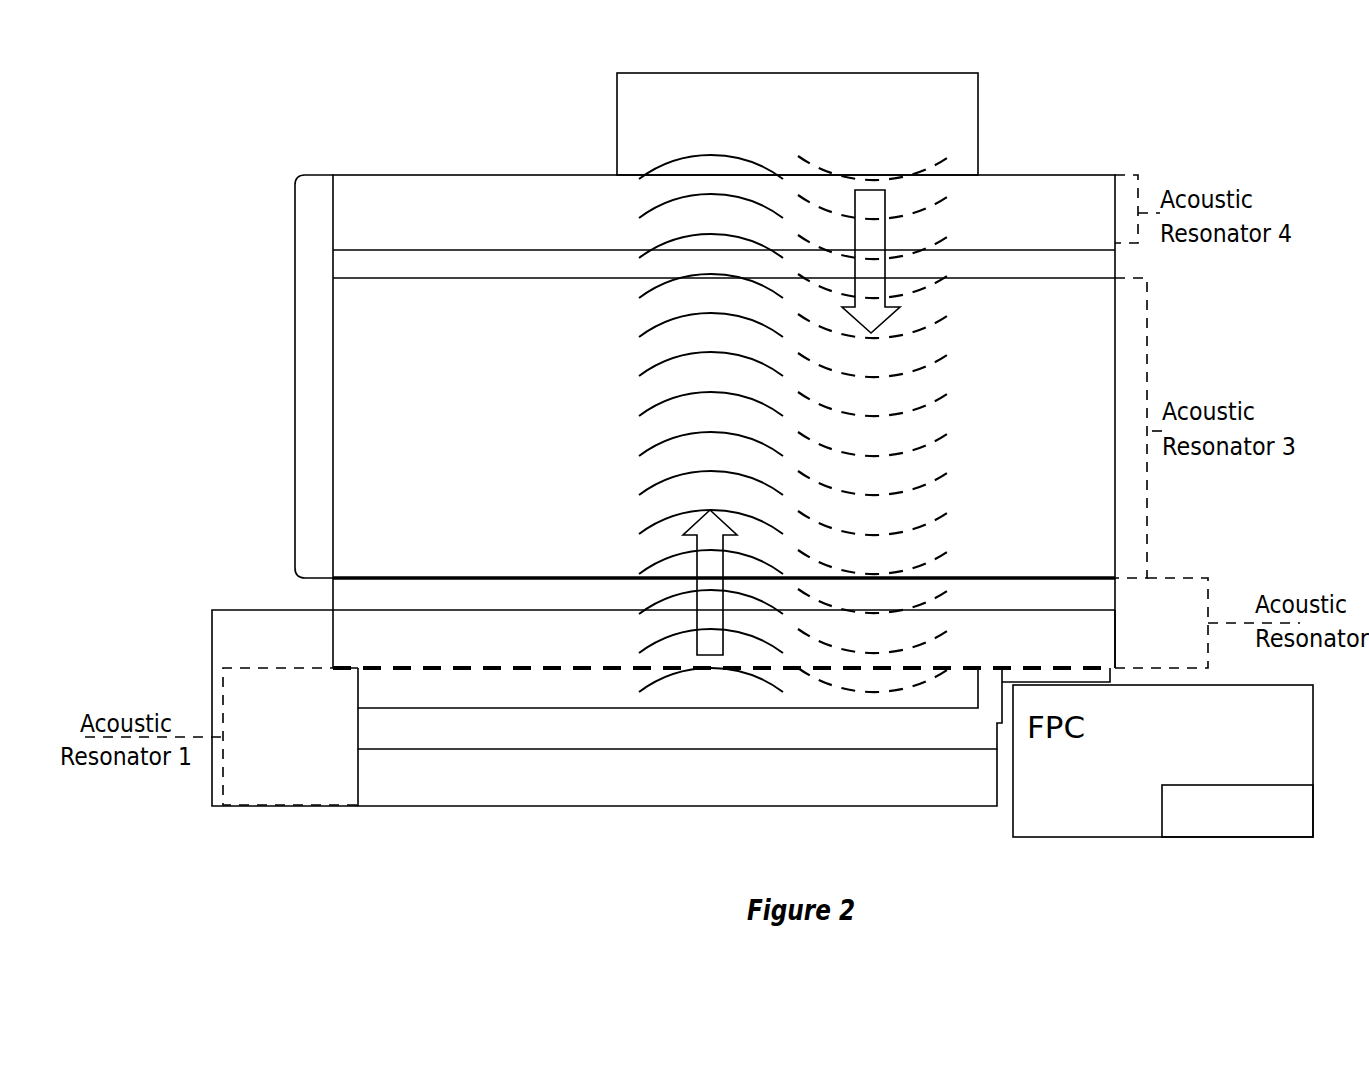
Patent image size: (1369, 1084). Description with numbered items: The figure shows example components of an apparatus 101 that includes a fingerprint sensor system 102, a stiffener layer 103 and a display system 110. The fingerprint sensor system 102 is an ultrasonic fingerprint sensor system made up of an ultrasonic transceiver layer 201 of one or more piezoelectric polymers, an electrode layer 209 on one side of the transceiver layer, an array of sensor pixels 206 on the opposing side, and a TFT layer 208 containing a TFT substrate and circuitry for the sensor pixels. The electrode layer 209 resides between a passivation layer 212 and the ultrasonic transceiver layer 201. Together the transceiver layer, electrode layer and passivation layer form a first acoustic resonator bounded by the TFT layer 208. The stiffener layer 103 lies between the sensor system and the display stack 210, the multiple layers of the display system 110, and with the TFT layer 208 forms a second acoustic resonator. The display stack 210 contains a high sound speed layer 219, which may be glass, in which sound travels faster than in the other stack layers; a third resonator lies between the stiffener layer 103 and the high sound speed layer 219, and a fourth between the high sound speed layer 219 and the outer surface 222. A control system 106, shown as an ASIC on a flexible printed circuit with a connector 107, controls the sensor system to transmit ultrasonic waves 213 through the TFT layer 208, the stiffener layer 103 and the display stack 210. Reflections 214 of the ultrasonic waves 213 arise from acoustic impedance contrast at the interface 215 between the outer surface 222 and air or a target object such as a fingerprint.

The apparatus 101 is at (993, 172).
The fingerprint sensor system 102 is at (212, 705).
The stiffener layer 103 is at (333, 593).
The control system 106 is at (1181, 837).
The flexible printed circuit connector 107 is at (1112, 677).
The display system 110 is at (295, 382).
The display stack 210 is at (390, 365).
The ultrasonic transceiver layer 201 is at (358, 688).
The array of sensor pixels 206 is at (383, 668).
The TFT layer 208 is at (1117, 633).
The electrode layer 209 is at (358, 731).
The passivation layer 212 is at (358, 777).
The ultrasonic waves 213 is at (665, 440).
The reflections 214 is at (915, 368).
The interface 215 is at (617, 175).
The high sound speed layer 219 is at (333, 268).
The outer surface 222 is at (410, 175).